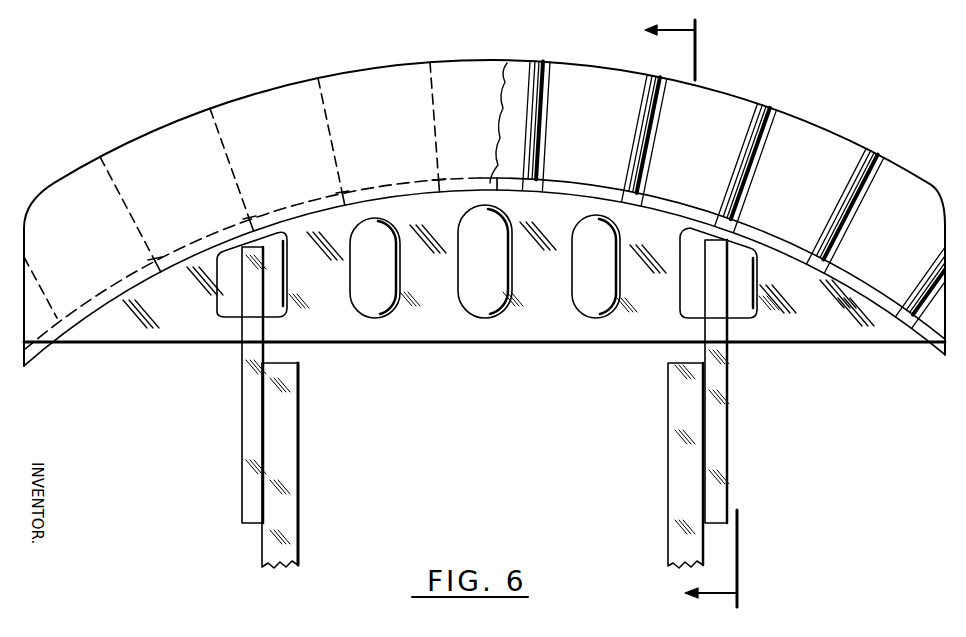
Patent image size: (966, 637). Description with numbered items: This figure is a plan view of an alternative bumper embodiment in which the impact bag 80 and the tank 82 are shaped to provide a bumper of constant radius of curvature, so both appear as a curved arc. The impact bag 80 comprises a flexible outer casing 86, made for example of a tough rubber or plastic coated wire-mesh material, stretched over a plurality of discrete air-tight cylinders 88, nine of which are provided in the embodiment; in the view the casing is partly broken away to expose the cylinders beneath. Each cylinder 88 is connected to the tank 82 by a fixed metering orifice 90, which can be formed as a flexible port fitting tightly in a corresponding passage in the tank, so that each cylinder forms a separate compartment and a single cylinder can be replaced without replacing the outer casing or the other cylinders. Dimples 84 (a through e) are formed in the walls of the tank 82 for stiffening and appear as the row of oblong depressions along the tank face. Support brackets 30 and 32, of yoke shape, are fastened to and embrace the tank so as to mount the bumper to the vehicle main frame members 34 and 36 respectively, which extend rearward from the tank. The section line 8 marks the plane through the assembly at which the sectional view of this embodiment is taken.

The impact bag 80 is at (288, 80).
The tank 82 is at (122, 347).
The dimples 84 is at (692, 307).
The flexible outer casing 86 is at (505, 82).
The air-tight cylinders 88 is at (805, 120).
The metering orifice 90 is at (103, 283).
The support bracket 30 is at (247, 384).
The support bracket 32 is at (718, 388).
The vehicle main frame member 34 is at (292, 388).
The vehicle main frame member 36 is at (675, 387).
The section line 8— 8 is at (682, 310).